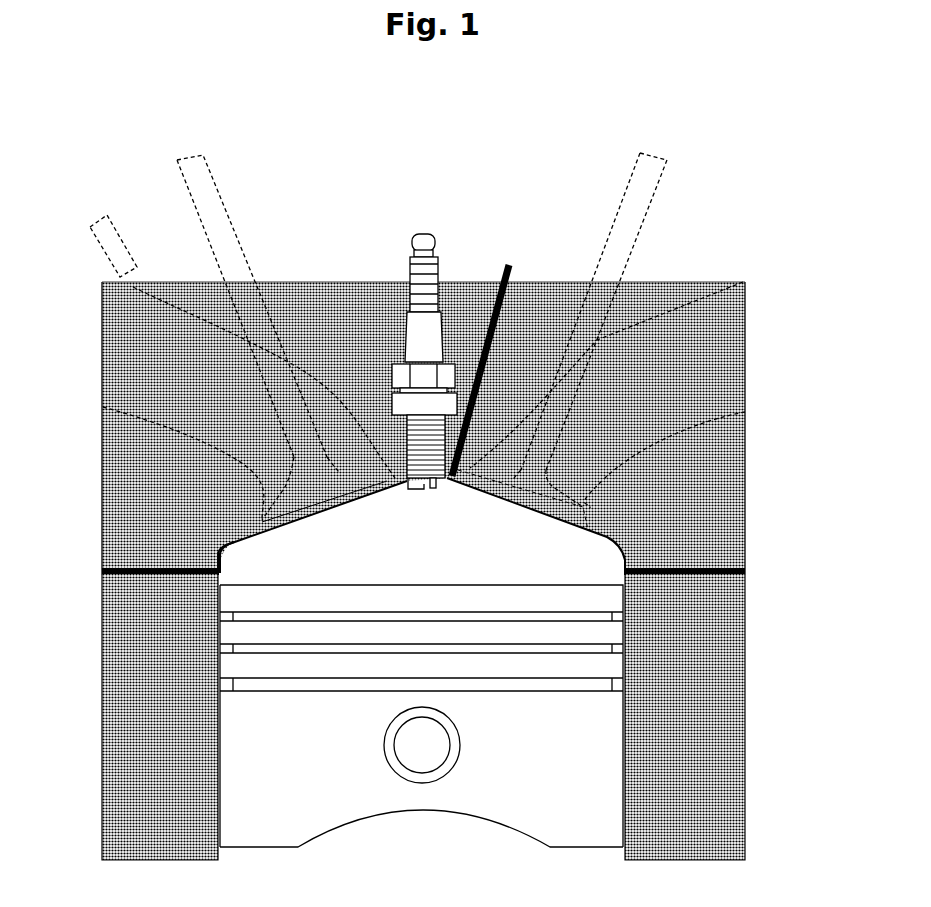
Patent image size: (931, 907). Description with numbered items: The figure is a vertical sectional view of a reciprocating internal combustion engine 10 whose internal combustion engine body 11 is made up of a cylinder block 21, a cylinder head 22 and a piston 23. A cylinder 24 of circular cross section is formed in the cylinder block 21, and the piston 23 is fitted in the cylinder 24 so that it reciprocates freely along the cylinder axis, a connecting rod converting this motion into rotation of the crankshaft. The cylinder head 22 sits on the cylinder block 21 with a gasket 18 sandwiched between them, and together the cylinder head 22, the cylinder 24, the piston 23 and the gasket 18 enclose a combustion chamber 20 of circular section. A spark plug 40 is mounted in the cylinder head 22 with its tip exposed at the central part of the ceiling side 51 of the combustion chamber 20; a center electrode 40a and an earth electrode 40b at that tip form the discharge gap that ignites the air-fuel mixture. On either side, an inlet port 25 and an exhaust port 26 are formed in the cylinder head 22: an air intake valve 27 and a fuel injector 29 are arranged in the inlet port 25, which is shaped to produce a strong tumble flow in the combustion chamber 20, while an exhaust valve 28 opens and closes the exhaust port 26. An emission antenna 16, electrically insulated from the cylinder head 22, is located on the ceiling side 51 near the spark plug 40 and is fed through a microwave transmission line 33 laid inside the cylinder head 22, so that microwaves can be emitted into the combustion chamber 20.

The internal combustion engine 10 is at (577, 172).
The internal combustion engine body 11 is at (494, 216).
The emission antenna 16 is at (455, 483).
The gasket 18 is at (747, 572).
The combustion chamber 20 is at (421, 695).
The cylinder block 21 is at (728, 693).
The cylinder head 22 is at (728, 493).
The piston 23 is at (565, 832).
The cylinder 24 is at (221, 571).
The inlet port 25 is at (101, 389).
The exhaust port 26 is at (695, 303).
The air intake valve 27 is at (226, 209).
The exhaust valve 28 is at (660, 187).
The injector 29 is at (113, 232).
The transmission line 33 is at (502, 300).
The spark plug 40 is at (442, 310).
The center electrode 40a is at (434, 489).
The earth electrode 40b is at (420, 492).
The ceiling side 51 is at (316, 513).